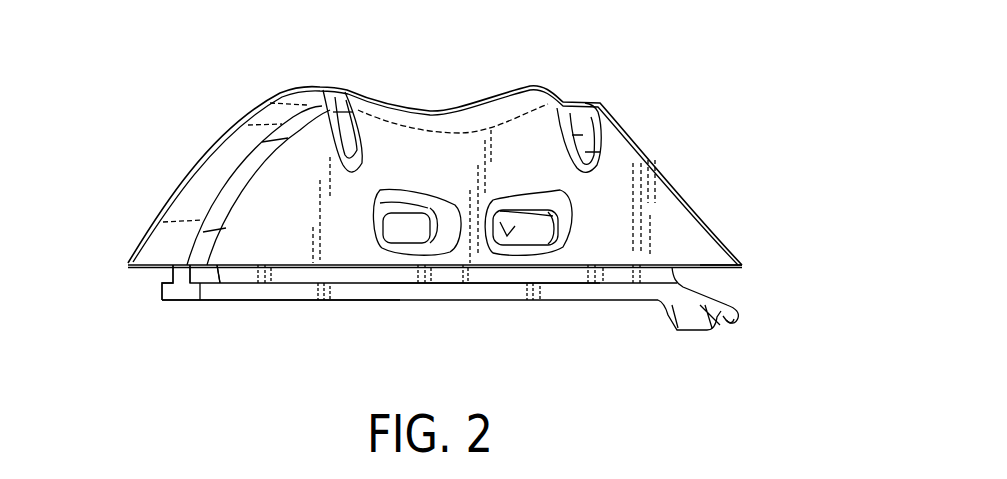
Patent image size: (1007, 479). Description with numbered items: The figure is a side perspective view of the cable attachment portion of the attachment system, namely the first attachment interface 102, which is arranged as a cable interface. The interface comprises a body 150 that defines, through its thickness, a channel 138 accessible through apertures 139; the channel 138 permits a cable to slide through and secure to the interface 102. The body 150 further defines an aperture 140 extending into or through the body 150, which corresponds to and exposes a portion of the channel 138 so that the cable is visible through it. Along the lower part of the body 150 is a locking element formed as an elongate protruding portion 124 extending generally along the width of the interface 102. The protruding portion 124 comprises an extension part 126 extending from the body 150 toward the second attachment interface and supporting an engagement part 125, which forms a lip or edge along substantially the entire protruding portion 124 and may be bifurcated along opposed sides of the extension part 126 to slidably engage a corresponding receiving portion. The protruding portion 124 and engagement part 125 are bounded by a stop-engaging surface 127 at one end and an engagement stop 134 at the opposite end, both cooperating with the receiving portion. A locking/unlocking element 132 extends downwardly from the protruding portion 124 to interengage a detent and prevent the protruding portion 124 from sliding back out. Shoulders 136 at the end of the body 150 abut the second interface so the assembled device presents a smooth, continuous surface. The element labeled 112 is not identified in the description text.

The first attachment interface 102 is at (188, 139).
The base plate 112 is at (507, 301).
The protruding portion 124 is at (328, 301).
The engagement part 125 is at (417, 293).
The extension part 126 is at (238, 275).
The stop-engaging surface 127 is at (182, 280).
The locking/unlocking element 132 is at (682, 318).
The engagement stop 134 is at (728, 318).
The shoulders 136 is at (728, 268).
The channel 138 is at (332, 92).
The apertures 139 is at (572, 105).
The aperture 140 is at (408, 222).
The body 150 is at (700, 235).